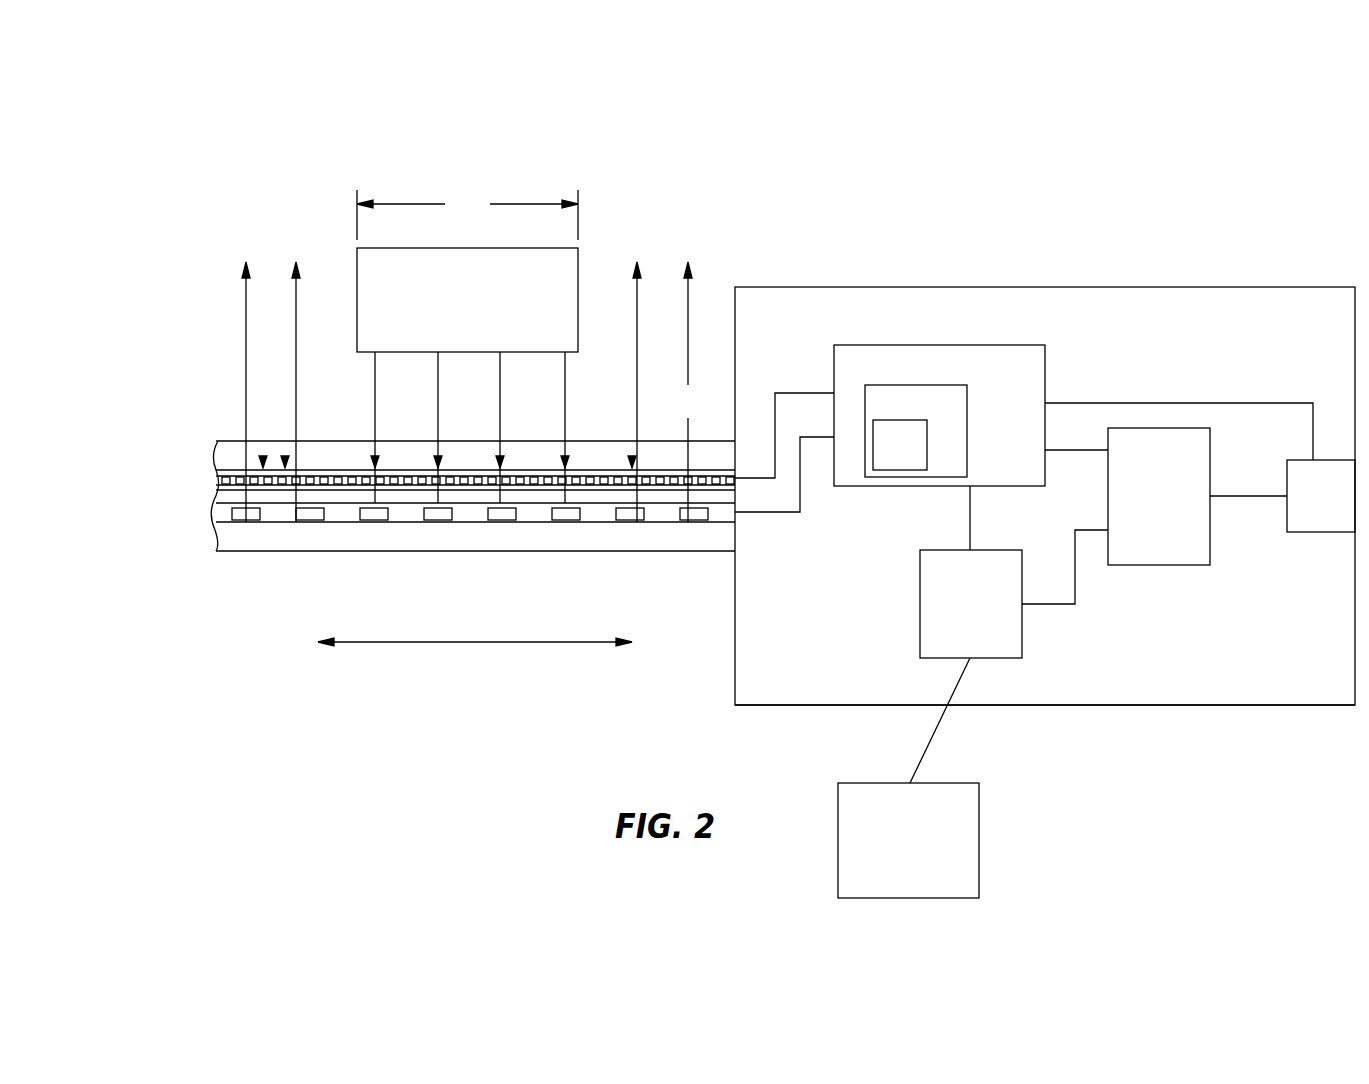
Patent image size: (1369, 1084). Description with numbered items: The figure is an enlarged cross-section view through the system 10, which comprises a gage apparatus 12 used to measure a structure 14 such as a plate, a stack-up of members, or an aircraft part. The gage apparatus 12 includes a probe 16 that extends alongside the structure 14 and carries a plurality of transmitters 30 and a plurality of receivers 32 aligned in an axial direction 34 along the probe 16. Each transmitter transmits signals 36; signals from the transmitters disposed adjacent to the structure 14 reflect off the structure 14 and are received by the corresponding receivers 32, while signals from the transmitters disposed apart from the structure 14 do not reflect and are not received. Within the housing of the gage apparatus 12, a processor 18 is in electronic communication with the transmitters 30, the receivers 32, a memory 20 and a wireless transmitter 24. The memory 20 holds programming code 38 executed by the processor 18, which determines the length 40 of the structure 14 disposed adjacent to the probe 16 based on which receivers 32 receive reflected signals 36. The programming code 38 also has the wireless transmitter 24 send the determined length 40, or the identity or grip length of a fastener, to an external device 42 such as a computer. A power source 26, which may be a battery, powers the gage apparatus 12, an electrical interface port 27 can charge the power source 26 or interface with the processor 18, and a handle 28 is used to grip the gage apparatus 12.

The system 10 is at (1007, 143).
The gage apparatus 12 is at (1130, 252).
The structure 14 is at (467, 300).
The probe 16 is at (237, 553).
The processor 18 is at (939, 415).
The memory 20 is at (968, 403).
The wireless transmitter 24 is at (920, 600).
The power source 26 is at (1260, 583).
The electrical interface port 27 is at (1318, 535).
The handle 28 is at (1158, 676).
The transmitters 30 is at (688, 522).
The receivers 32 is at (660, 412).
The axial direction 34 is at (478, 648).
The signals 36 is at (750, 262).
The programming code 38 is at (928, 453).
The length 40 is at (467, 206).
The device 42 is at (908, 778).